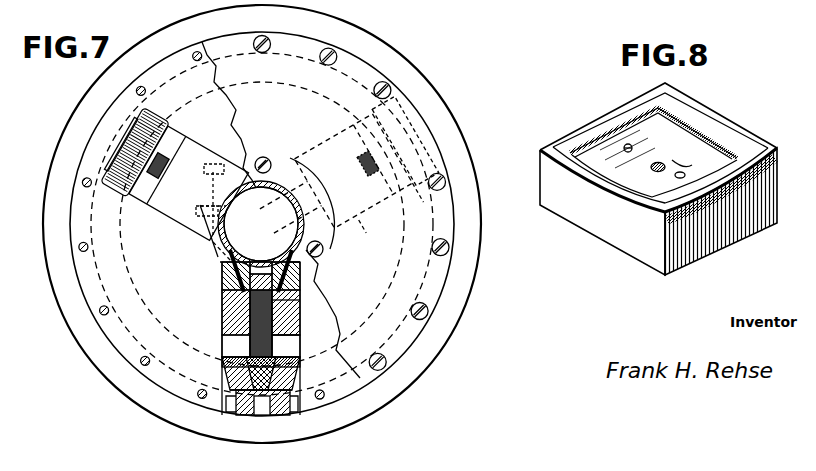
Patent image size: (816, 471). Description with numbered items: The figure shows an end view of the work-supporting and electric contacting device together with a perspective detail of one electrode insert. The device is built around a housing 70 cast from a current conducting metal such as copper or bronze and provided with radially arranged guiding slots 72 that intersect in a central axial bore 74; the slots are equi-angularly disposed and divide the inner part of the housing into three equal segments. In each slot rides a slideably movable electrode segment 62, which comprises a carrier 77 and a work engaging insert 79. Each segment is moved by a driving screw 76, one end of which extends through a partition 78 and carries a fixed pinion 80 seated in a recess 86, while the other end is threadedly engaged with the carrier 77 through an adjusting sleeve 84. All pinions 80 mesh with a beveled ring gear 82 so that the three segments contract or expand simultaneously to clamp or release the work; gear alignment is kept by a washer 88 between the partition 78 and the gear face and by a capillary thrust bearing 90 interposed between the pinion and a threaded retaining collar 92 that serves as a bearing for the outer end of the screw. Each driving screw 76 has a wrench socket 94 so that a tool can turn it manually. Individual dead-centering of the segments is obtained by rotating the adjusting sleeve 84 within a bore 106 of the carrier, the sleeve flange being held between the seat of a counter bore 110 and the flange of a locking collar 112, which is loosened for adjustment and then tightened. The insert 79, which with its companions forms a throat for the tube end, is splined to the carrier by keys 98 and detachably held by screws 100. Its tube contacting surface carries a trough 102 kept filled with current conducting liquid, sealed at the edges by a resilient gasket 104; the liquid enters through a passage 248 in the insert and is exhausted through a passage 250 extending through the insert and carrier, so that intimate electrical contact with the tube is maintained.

In FIG. 7, the electrode segment 62 is at (194, 148).
In FIG. 7, the housing 70 is at (462, 300).
In FIG. 7, the guiding slot 72 is at (328, 140).
In FIG. 7, the central axial bore 74 is at (222, 262).
In FIG. 7, the driving screw 76 is at (164, 168).
In FIG. 7, the carrier 77 is at (312, 292).
In FIG. 7, the partition 78 is at (128, 194).
In FIG. 7, the work engaging insert 79 is at (206, 228).
In FIG. 8, the work engaging insert 79 is at (632, 250).
In FIG. 7, the pinion 80 is at (118, 188).
In FIG. 7, the beveled ring gear 82 is at (300, 382).
In FIG. 7, the adjusting sleeve 84 is at (298, 298).
In FIG. 7, the recess 86 is at (410, 190).
In FIG. 7, the washer 88 is at (300, 362).
In FIG. 7, the capillary thrust bearing 90 is at (292, 410).
In FIG. 7, the threaded retaining collar 92 is at (276, 417).
In FIG. 7, the wrench socket 94 is at (250, 417).
In FIG. 7, the key 98 is at (244, 140).
In FIG. 8, the key 98 is at (768, 232).
In FIG. 7, the screw 100 is at (238, 250).
In FIG. 8, the screw 100 is at (628, 152).
In FIG. 7, the trough 102 is at (275, 262).
In FIG. 8, the trough 102 is at (696, 128).
In FIG. 8, the resilient gasket 104 is at (622, 122).
In FIG. 7, the bore 106 is at (222, 314).
In FIG. 7, the counter bore 110 is at (300, 320).
In FIG. 7, the locking collar 112 is at (300, 338).
In FIG. 7, the passage 248 is at (222, 280).
In FIG. 8, the passage 248 is at (660, 163).
In FIG. 8, the passage 250 is at (718, 152).